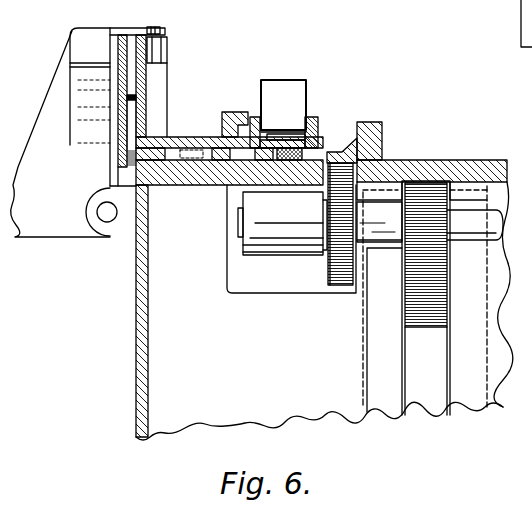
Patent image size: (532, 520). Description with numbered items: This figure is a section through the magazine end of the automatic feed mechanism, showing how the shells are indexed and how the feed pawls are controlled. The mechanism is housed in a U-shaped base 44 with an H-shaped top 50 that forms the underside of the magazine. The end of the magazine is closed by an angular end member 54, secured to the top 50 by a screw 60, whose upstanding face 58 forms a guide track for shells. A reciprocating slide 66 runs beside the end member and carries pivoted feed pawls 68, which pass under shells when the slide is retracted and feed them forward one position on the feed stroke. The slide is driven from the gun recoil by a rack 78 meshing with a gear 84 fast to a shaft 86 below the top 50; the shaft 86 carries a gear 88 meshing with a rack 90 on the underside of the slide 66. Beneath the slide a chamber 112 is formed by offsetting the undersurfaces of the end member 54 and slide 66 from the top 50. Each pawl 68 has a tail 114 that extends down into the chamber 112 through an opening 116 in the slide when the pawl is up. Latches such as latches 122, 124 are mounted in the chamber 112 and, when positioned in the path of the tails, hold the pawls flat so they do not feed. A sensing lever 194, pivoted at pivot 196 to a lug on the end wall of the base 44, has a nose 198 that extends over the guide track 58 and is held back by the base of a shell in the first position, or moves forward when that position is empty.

The U-shaped base 44 is at (142, 312).
The H-shaped top 50 is at (184, 176).
The angular end member 54 is at (183, 138).
The upstanding opposing face 58 is at (166, 47).
The screw 60 is at (133, 108).
The reciprocating slide 66 is at (319, 130).
The feed pawl 68 is at (291, 84).
The rack 78 is at (432, 322).
The gear 84 is at (424, 192).
The shaft 86 is at (470, 228).
The gear 88 is at (337, 264).
The rack 90 is at (358, 156).
The chamber 112 is at (245, 160).
The tail 114 is at (362, 150).
The opening 116 is at (304, 141).
The latch 122 is at (222, 161).
The latch 124 is at (267, 152).
The sensing lever 194 is at (62, 191).
The pivot 196 is at (97, 212).
The nose portion 198 is at (136, 28).